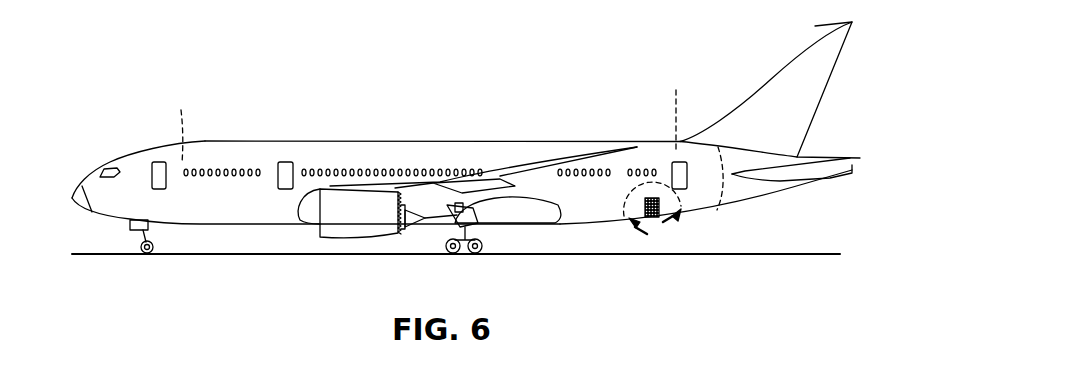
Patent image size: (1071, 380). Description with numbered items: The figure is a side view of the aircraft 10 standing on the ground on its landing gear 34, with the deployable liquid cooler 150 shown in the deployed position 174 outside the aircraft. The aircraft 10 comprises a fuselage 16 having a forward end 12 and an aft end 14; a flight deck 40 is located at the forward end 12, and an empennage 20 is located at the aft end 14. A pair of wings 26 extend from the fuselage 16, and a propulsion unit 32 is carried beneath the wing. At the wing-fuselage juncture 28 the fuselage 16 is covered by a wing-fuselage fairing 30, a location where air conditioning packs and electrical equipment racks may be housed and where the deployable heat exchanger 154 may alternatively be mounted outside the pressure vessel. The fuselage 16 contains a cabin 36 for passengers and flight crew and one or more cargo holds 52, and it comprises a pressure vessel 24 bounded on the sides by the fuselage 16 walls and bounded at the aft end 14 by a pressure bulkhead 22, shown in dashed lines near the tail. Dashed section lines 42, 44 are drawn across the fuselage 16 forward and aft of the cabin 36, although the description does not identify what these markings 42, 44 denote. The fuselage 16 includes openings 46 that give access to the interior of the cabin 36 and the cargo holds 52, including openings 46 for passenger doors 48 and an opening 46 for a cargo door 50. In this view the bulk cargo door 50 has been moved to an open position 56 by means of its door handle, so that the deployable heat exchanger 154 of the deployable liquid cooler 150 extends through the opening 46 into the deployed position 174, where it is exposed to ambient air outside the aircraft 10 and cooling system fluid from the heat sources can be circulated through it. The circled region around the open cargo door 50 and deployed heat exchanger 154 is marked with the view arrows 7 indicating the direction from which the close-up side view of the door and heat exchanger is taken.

The aircraft 10 is at (135, 150).
The forward end 12 is at (72, 197).
The aft end 14 is at (830, 182).
The fuselage 16 is at (532, 123).
The pressure vessel 24 is at (412, 143).
The empennage 20 is at (823, 95).
The pressure bulkhead 22 is at (724, 186).
The wings 26 is at (547, 160).
The wing-fuselage juncture 28 is at (511, 243).
The wing-fuselage fairing 30 is at (527, 217).
The propulsion unit 32 is at (350, 236).
The landing gear 34 is at (138, 248).
The cabin 36 is at (265, 149).
The flight deck 40 is at (96, 175).
The fuselage section 42 is at (433, 113).
The section joint 44 is at (433, 113).
The opening 46 is at (417, 202).
The passenger door 48 is at (160, 190).
The cargo door 50 is at (631, 245).
The open position 56 is at (634, 218).
The cargo hold 52 is at (257, 218).
The deployable liquid cooler 150 is at (729, 261).
The deployable heat exchanger 154 is at (729, 261).
The deployed position 174 is at (678, 214).
The view direction of FIG. 7 is at (655, 230).